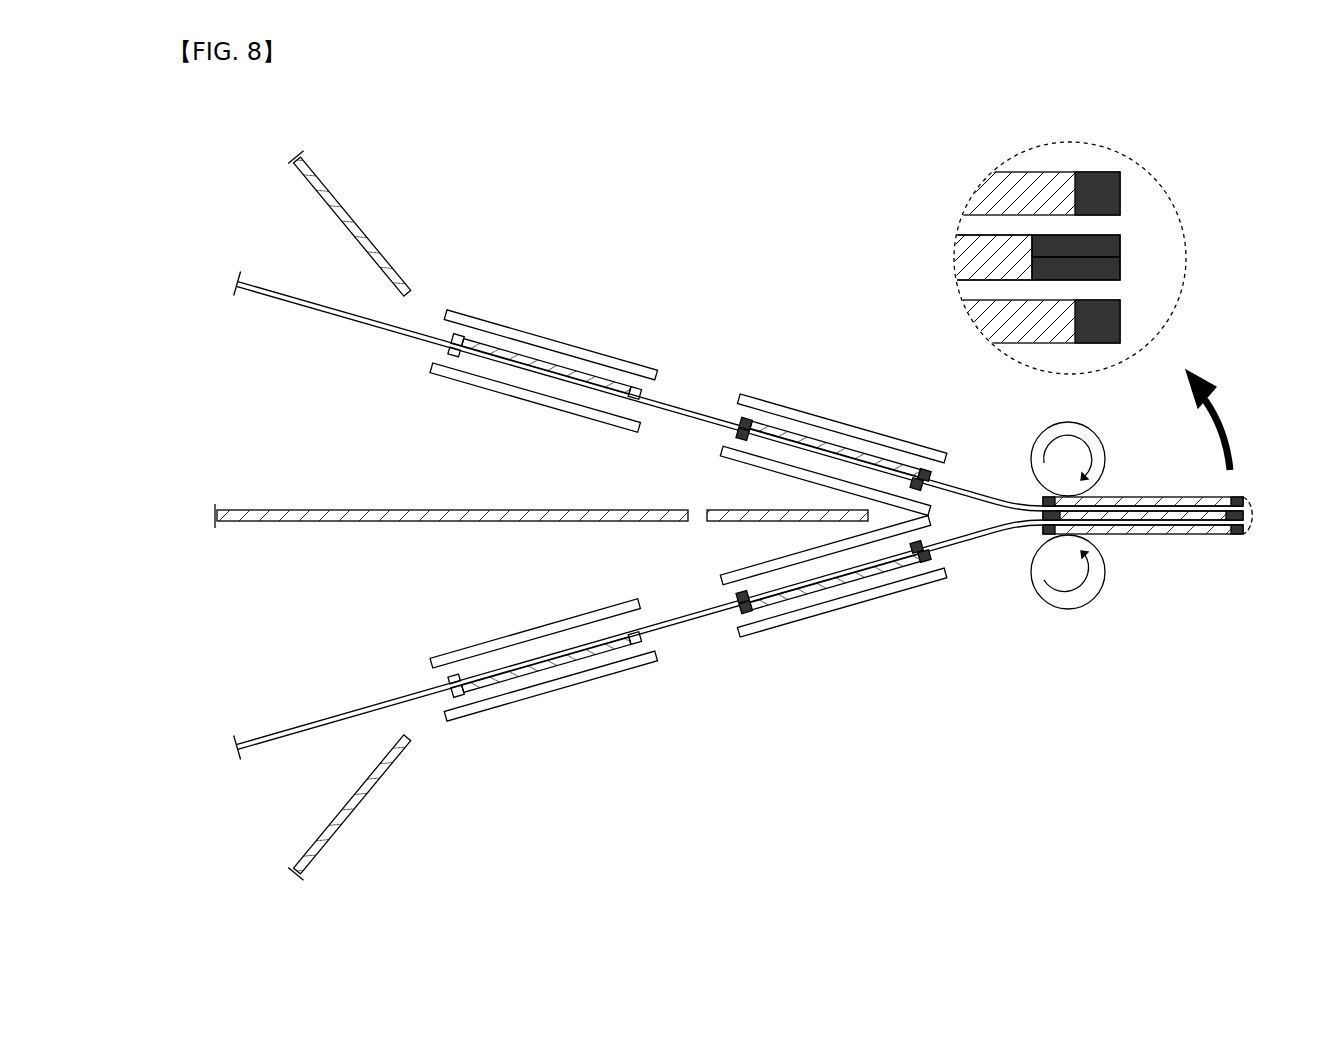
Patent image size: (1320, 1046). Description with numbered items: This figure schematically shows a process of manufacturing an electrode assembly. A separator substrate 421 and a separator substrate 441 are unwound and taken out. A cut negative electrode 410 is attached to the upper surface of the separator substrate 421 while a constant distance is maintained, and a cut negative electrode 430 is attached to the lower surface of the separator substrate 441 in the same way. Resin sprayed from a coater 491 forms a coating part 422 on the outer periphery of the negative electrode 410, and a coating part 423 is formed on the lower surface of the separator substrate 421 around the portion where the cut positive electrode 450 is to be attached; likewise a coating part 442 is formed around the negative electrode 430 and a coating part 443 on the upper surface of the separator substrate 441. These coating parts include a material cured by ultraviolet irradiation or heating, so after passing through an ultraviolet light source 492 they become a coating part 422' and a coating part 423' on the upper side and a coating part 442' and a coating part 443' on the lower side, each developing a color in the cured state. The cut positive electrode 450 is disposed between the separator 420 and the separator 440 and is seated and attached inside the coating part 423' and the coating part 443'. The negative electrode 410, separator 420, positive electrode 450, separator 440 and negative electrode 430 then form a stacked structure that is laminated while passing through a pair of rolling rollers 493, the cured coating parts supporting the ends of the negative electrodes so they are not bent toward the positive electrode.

The negative electrode 410 is at (350, 222).
The separator 420 is at (205, 270).
The separator substrate 421 is at (273, 293).
The coating part 422 is at (536, 326).
The coating part 423 is at (417, 384).
The coating part 422' is at (824, 409).
The coating part 423' is at (954, 362).
The negative electrode 430 is at (352, 810).
The separator 440 is at (205, 760).
The separator substrate 441 is at (272, 747).
The coating part 442 is at (536, 709).
The coating part 443 is at (425, 650).
The coating part 442' is at (825, 625).
The coating part 443' is at (956, 430).
The positive electrode 450 is at (316, 522).
The coater 491 is at (598, 345).
The ultraviolet light source 492 is at (768, 463).
The rolling rollers 493 is at (1030, 580).